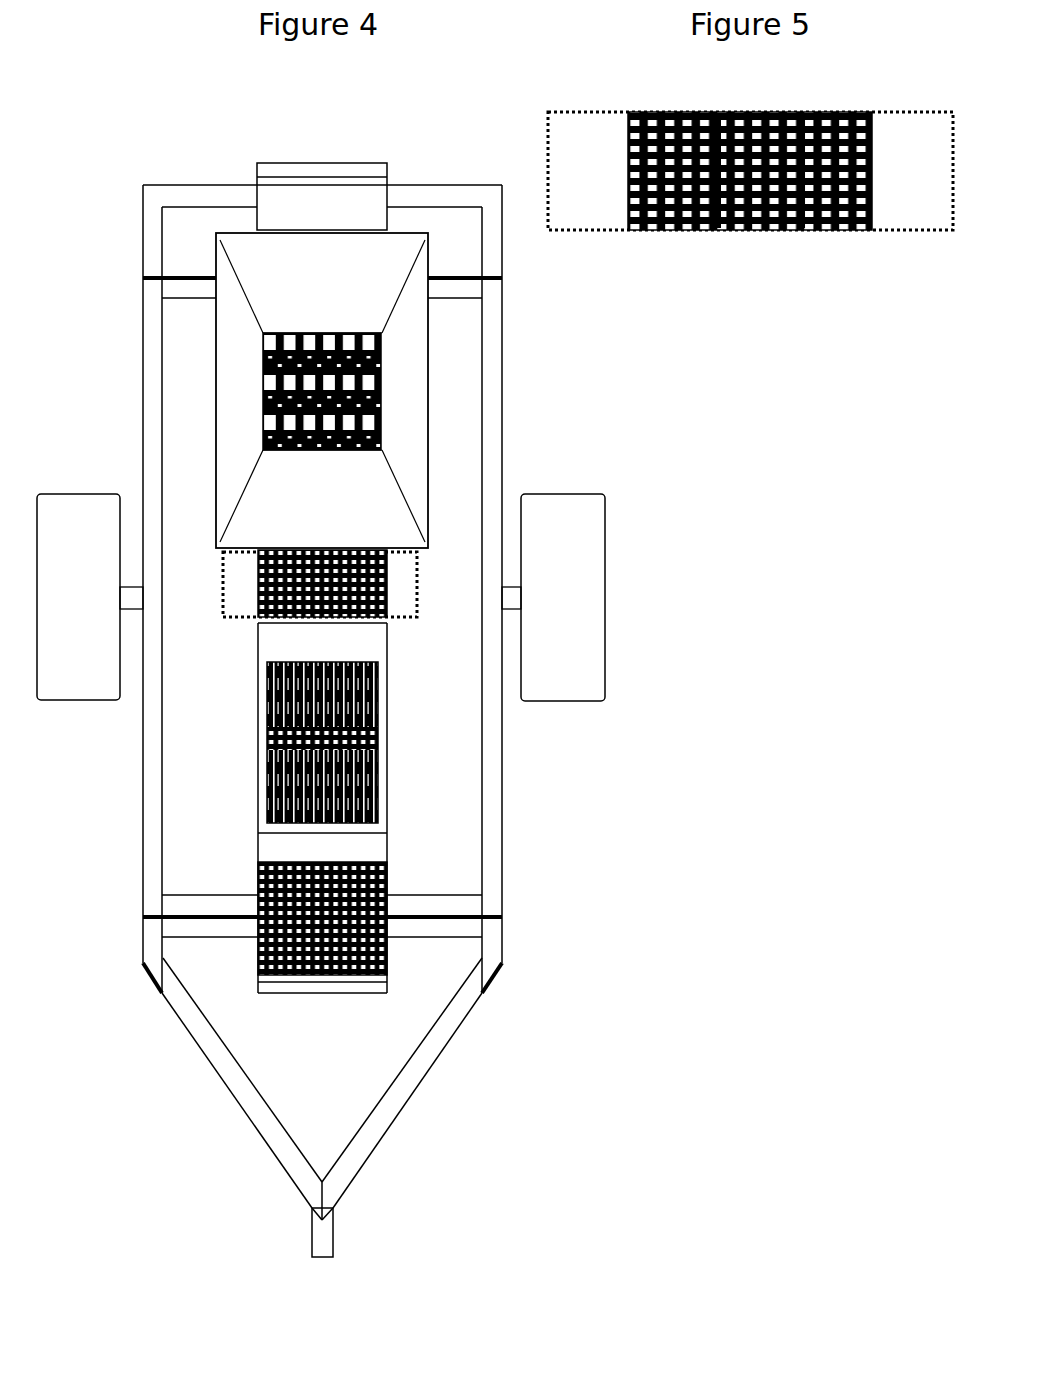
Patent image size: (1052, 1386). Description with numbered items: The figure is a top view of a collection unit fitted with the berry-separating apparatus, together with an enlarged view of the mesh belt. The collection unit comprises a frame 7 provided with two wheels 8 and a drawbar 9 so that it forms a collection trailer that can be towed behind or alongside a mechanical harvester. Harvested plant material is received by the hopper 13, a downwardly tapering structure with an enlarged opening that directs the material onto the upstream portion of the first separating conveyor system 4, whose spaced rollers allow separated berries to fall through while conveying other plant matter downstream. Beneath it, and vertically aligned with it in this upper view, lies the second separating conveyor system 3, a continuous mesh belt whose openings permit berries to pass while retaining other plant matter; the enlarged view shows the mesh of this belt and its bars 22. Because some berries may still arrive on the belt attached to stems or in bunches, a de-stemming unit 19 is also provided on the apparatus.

In FIG. 4, the second separating conveyor system 3 is at (332, 582).
In FIG. 5, the second separating conveyor system 3 is at (890, 210).
In FIG. 4, the first separating conveyor system 4 is at (343, 398).
In FIG. 4, the frame 7 is at (150, 858).
In FIG. 4, the wheels 8 is at (63, 685).
In FIG. 4, the drawbar 9 is at (423, 1058).
In FIG. 4, the hopper 13 is at (267, 277).
In FIG. 4, the de-stemming unit 19 is at (405, 764).
In FIG. 5, the screen bars 22 is at (722, 230).